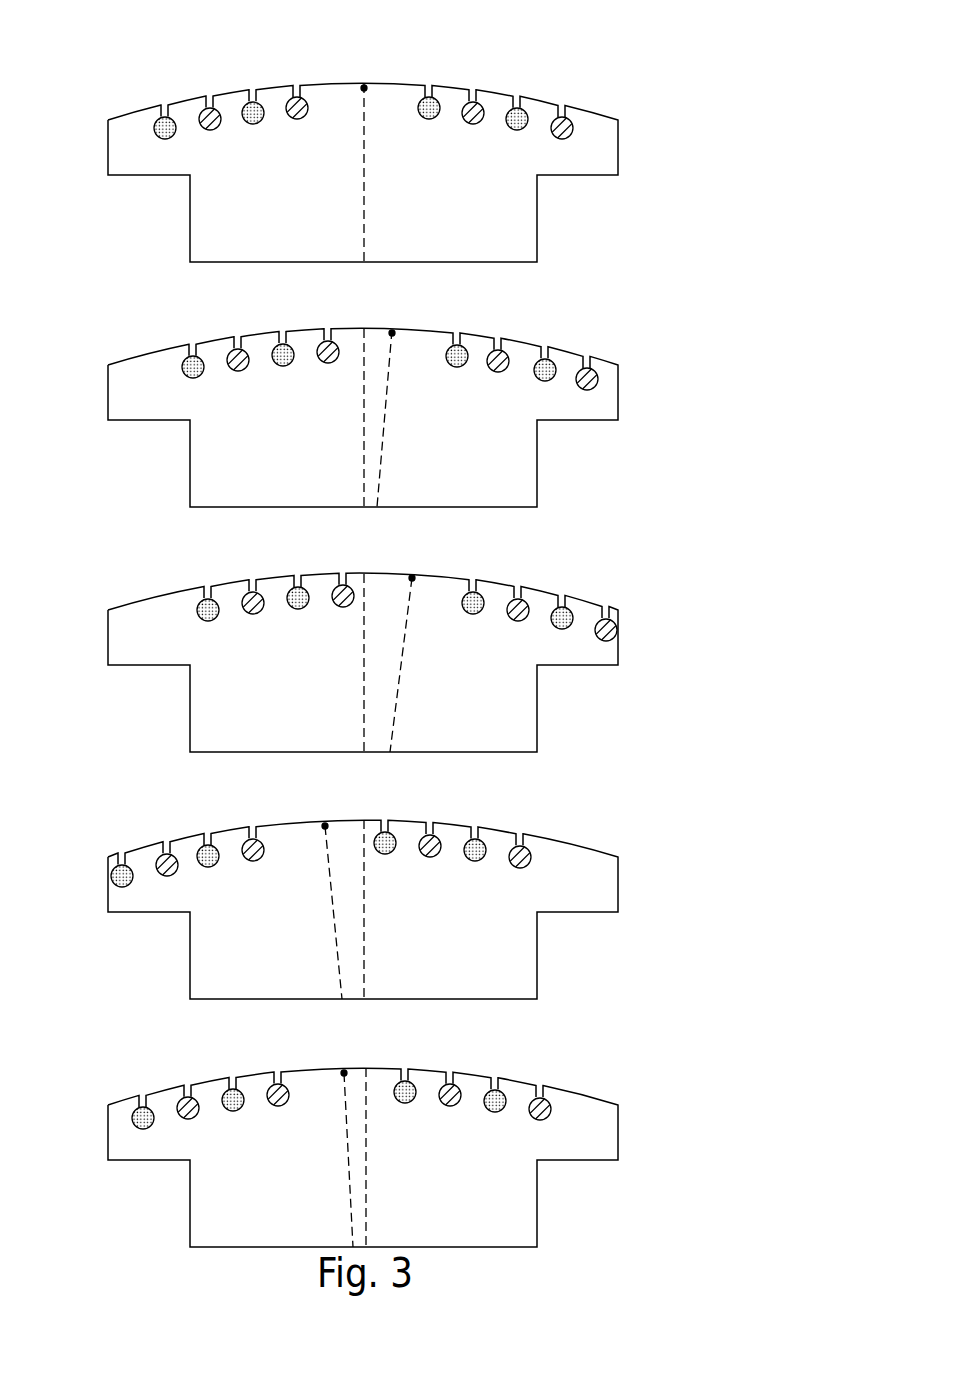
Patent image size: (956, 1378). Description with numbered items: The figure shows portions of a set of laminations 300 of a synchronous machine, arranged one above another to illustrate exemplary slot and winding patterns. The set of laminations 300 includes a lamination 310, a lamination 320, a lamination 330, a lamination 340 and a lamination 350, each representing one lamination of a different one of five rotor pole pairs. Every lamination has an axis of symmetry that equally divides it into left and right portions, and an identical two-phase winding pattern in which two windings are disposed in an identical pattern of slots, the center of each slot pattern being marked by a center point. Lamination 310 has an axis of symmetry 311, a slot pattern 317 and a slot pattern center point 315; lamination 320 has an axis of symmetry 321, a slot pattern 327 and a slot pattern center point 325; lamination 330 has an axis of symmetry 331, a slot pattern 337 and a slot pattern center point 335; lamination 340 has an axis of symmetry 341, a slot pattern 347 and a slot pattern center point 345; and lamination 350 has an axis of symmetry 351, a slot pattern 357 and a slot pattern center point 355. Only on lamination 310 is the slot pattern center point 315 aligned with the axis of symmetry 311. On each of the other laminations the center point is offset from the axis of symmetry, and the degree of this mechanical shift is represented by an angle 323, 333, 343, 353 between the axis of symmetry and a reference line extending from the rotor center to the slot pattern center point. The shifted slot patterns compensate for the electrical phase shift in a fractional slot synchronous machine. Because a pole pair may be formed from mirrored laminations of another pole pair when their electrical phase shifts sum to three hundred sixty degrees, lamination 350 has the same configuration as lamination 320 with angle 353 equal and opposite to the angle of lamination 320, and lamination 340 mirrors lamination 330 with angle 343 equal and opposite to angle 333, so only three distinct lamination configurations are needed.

The set of laminations 300 is at (88, 73).
The lamination 310 is at (618, 119).
The axis of symmetry 311 is at (364, 150).
The slot pattern center point 315 is at (364, 86).
The slot pattern 317 is at (508, 63).
The lamination 320 is at (618, 364).
The axis of symmetry 321 is at (364, 398).
The angle 323 is at (364, 368).
The slot pattern center point 325 is at (392, 331).
The slot pattern 327 is at (508, 322).
The lamination 330 is at (616, 609).
The axis of symmetry 331 is at (364, 642).
The angle 333 is at (364, 622).
The slot pattern center point 335 is at (413, 576).
The slot pattern 337 is at (508, 562).
The lamination 340 is at (616, 856).
The axis of symmetry 341 is at (364, 887).
The angle 343 is at (364, 870).
The slot pattern center point 345 is at (325, 824).
The slot pattern 347 is at (509, 805).
The lamination 350 is at (616, 1104).
The axis of symmetry 351 is at (366, 1137).
The angle 353 is at (366, 1118).
The slot pattern center point 355 is at (344, 1070).
The slot pattern 357 is at (510, 1048).